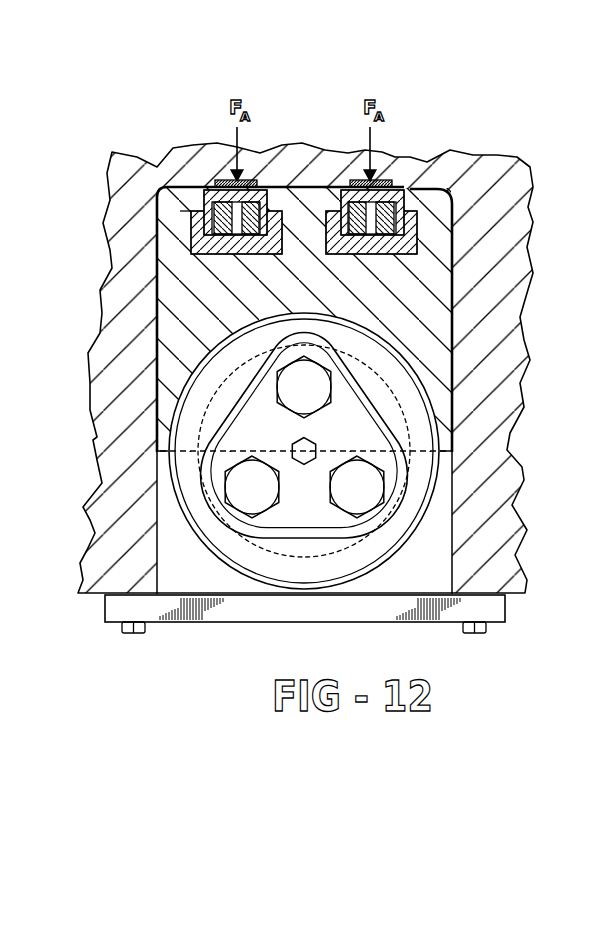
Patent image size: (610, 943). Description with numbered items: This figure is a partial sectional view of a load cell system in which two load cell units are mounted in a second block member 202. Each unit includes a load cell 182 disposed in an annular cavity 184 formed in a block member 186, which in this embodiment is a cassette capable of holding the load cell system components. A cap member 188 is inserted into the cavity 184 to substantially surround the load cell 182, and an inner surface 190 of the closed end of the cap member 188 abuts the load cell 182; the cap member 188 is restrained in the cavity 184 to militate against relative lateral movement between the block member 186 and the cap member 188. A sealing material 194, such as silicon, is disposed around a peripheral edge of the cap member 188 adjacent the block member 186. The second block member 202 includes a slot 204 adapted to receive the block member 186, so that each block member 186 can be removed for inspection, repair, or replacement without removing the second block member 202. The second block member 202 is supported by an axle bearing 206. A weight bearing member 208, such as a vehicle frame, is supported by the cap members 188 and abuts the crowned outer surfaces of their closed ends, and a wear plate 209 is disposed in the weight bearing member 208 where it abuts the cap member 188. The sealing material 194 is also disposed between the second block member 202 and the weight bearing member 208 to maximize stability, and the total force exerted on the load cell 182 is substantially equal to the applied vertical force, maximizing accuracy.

The load cell 182 is at (215, 180).
The annular cavity 184 is at (200, 213).
The block member 186 is at (388, 254).
The cap member 188 is at (204, 191).
The inner surface 190 is at (195, 235).
The sealing material 194 is at (446, 198).
The second block member 202 is at (163, 377).
The slot 204 is at (194, 245).
The axle bearing 206 is at (157, 482).
The weight bearing member 208 is at (103, 313).
The wear plate 209 is at (358, 180).